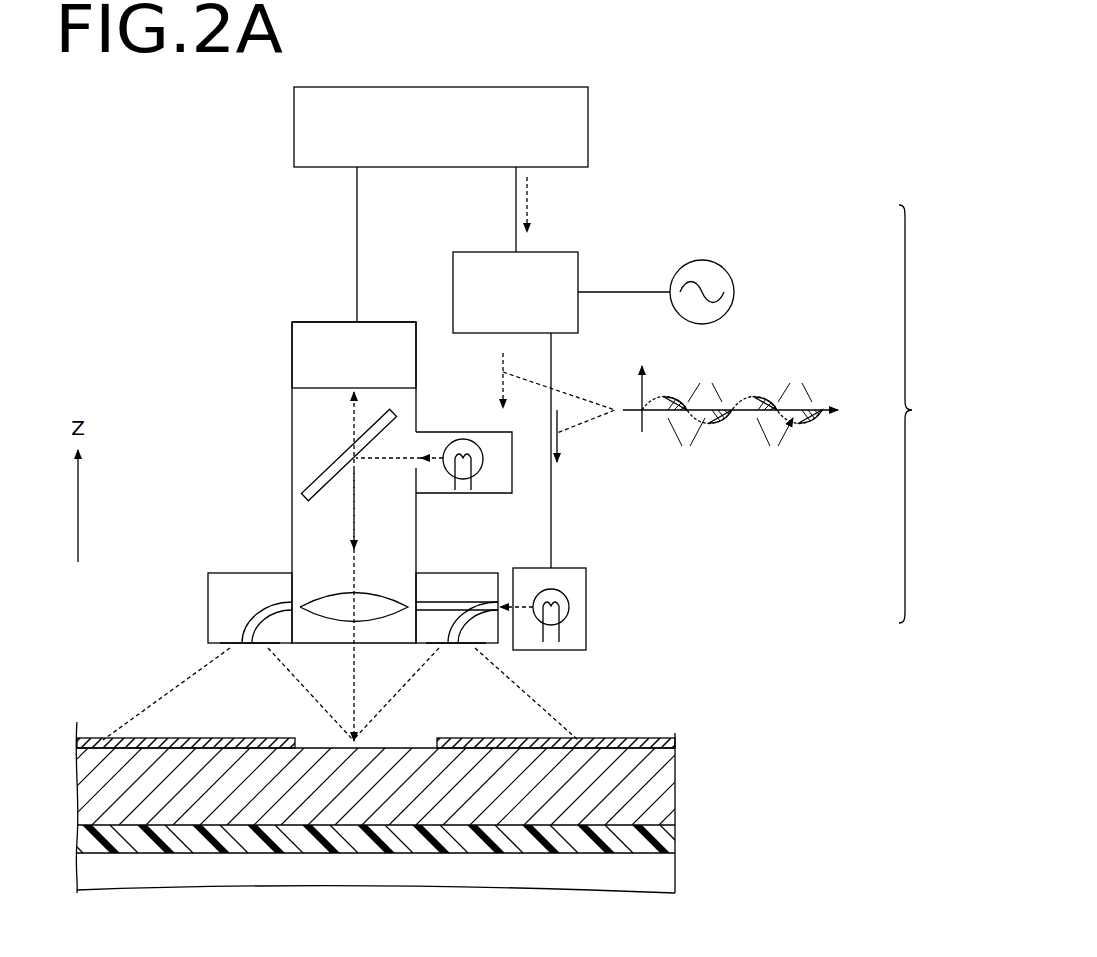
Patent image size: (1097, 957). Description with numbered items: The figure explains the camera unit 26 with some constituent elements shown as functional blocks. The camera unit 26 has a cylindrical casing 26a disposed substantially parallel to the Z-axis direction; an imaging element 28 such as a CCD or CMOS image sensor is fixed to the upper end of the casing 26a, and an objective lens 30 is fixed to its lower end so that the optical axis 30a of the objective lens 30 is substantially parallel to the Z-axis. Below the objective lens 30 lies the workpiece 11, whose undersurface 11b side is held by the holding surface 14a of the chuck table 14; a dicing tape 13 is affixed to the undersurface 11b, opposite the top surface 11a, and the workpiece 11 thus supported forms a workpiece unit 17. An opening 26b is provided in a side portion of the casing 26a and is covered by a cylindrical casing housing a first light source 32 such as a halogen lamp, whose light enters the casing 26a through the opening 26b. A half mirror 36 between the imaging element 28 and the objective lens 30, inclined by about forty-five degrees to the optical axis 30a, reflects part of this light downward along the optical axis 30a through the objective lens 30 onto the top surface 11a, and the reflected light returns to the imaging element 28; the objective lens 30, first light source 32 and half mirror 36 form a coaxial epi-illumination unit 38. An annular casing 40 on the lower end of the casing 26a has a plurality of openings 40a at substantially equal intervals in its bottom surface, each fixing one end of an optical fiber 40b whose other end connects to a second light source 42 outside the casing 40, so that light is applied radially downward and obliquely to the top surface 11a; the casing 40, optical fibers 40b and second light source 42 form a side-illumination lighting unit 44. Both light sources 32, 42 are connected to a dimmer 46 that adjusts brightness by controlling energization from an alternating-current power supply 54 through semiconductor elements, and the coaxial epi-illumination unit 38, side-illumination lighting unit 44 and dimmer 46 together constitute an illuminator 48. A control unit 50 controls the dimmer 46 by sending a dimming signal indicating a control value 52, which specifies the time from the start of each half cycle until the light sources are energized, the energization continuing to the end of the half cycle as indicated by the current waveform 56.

The workpiece 11 is at (690, 775).
The top surface 11a is at (617, 740).
The undersurface 11b is at (617, 827).
The dicing tape 13 is at (676, 842).
The chuck table 14 is at (672, 875).
The holding surface 14a is at (128, 838).
The workpiece unit 17 is at (688, 731).
The camera unit 26 is at (291, 310).
The casing 26a is at (292, 425).
The opening 26b is at (409, 467).
The imaging element 28 is at (292, 369).
The objective lens 30 is at (340, 590).
The optical axis 30a is at (372, 603).
The first light source 32 is at (463, 440).
The half mirror 36 is at (312, 481).
The coaxial epi-illumination unit 38 is at (515, 481).
The annular casing 40 is at (221, 573).
The openings 40a is at (243, 652).
The optical fiber 40b is at (270, 600).
The second light source 42 is at (554, 590).
The side-illumination lighting unit 44 is at (589, 607).
The dimmer 46 is at (580, 262).
The illuminator 48 is at (922, 414).
The control unit 50 is at (452, 87).
The control value 52 is at (535, 206).
The alternating-current power supply 54 is at (736, 297).
The current waveform 56 is at (740, 382).